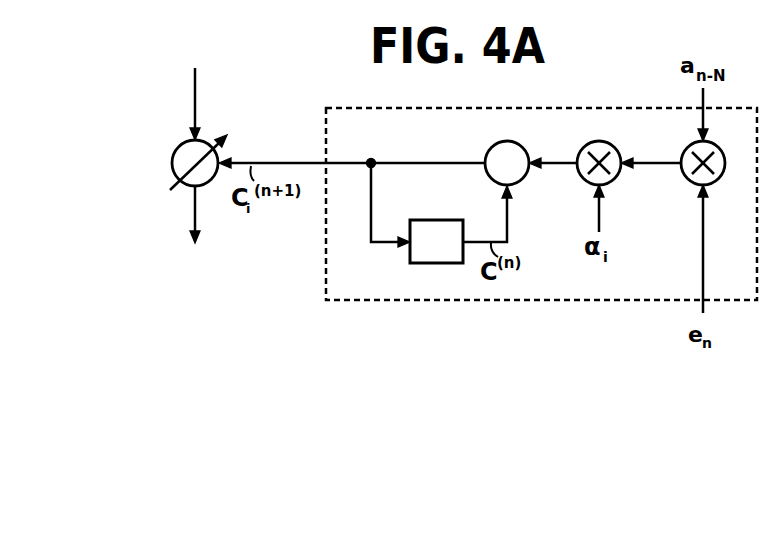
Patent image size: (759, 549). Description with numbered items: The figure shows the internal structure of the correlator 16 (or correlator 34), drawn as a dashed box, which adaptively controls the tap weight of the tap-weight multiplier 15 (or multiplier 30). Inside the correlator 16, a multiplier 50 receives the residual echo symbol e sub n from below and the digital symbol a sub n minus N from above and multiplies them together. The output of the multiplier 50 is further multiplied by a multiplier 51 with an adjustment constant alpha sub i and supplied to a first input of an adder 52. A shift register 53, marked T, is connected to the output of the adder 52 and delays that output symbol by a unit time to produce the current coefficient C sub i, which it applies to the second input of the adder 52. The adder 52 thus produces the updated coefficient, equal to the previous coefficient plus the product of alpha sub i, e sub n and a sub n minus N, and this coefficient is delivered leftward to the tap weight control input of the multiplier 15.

The tap-weight multiplier 15 is at (172, 155).
The adaptive weighting element (alternate embodiment) 30 is at (178, 148).
The correlator 16 is at (529, 232).
The correlator (alternate embodiment) 34 is at (377, 300).
The multiplier 50 is at (687, 179).
The multiplier 51 is at (583, 179).
The adder 52 is at (522, 147).
The shift register 53 is at (423, 220).